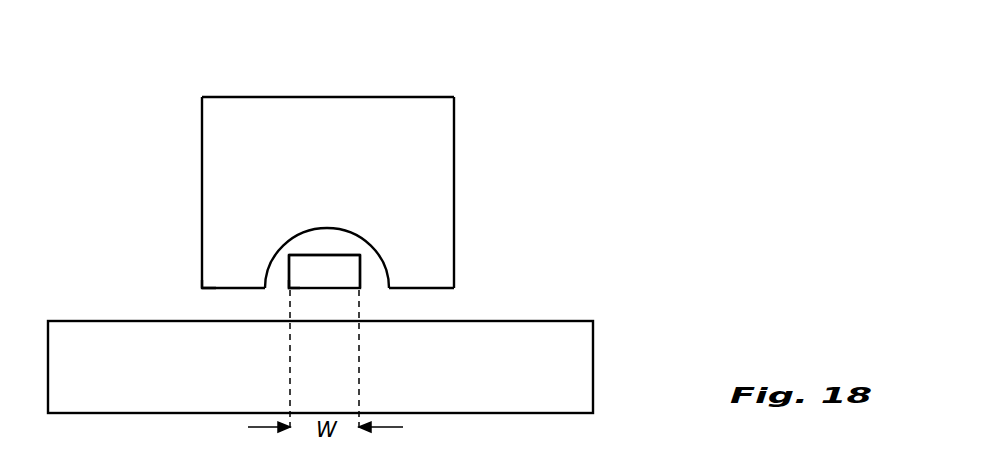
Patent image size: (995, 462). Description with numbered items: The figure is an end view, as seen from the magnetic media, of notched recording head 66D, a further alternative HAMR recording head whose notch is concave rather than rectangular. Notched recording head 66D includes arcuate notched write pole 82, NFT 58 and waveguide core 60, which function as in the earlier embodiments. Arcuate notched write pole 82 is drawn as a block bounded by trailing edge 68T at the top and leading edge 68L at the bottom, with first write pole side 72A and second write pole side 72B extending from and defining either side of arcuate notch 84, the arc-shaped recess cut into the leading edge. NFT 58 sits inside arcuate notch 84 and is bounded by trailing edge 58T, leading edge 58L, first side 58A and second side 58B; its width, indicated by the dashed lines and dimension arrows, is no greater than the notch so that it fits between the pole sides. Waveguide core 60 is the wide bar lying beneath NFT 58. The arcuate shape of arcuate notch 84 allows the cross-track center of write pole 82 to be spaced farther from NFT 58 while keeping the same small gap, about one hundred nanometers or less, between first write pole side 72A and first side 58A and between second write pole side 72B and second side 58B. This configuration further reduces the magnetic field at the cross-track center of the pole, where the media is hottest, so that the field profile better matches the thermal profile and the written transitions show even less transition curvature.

The arcuate notched write pole 82 is at (443, 115).
The trailing edge 68T is at (281, 97).
The first write pole side 72A is at (213, 263).
The second write pole side 72B is at (446, 281).
The leading edge 68L is at (218, 288).
The arcuate notch 84 is at (321, 242).
The NFT 58 is at (324, 271).
The first side 58A is at (289, 272).
The second side 58B is at (359, 274).
The trailing edge 58T is at (347, 255).
The leading edge 58L is at (297, 288).
The waveguide core 60 is at (595, 345).
The notched recording head 66D is at (575, 127).